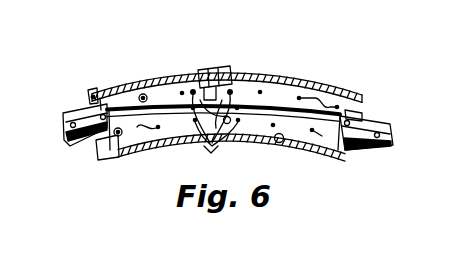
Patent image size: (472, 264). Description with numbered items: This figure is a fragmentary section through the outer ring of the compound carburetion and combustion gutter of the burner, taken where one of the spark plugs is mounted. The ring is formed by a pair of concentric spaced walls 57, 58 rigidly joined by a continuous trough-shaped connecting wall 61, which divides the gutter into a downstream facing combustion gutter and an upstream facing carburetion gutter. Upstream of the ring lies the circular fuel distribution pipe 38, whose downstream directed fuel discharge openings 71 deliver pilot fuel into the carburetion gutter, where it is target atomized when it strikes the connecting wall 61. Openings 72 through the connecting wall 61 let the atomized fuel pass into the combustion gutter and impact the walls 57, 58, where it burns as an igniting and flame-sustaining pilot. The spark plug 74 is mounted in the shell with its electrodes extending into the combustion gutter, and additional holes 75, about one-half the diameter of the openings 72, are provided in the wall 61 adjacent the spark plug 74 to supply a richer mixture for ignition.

The circular fuel distribution pipe 38 is at (377, 117).
The wall 57 is at (275, 77).
The wall 58 is at (280, 145).
The connecting wall 61 is at (330, 152).
The fuel discharge opening 71 is at (78, 117).
The opening 72 is at (143, 148).
The spark plug 74 is at (222, 67).
The additional hole 75 is at (213, 133).